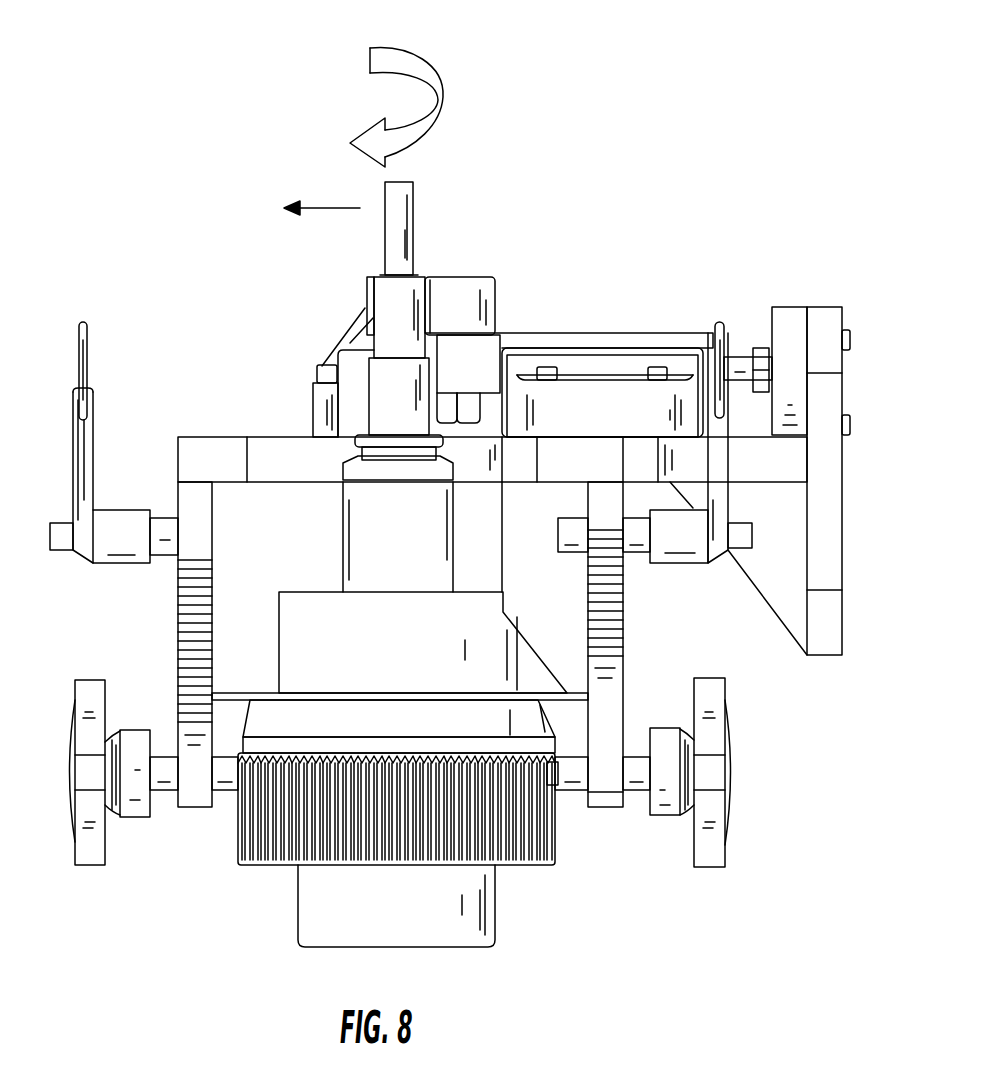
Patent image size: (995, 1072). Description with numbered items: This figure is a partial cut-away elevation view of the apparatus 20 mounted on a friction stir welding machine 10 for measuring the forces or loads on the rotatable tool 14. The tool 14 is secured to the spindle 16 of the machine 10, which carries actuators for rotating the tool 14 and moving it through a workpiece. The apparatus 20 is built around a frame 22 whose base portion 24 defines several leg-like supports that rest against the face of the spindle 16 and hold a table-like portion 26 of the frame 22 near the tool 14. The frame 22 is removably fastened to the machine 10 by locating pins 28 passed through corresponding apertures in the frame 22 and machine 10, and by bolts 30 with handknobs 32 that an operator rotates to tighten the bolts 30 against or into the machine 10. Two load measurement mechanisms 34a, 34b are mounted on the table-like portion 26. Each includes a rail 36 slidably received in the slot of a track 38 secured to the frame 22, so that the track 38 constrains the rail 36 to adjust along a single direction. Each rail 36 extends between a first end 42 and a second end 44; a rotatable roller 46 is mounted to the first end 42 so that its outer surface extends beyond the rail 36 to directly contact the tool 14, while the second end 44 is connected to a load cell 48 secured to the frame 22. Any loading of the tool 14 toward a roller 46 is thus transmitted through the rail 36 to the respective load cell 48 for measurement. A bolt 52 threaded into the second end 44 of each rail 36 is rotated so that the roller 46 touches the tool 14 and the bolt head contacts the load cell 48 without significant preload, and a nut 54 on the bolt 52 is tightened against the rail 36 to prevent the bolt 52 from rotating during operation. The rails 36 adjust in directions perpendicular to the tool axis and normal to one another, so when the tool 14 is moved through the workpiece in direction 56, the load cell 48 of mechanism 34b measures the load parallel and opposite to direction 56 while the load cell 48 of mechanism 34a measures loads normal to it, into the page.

The friction stir welding machine 10 is at (260, 962).
The tool 14 is at (385, 198).
The spindle 16 is at (495, 907).
The apparatus 20 is at (682, 190).
The frame 22 is at (843, 567).
The base portion 24 is at (625, 652).
The table-like portion 26 is at (796, 470).
The locating pins 28 is at (55, 552).
The bolts 30 is at (223, 790).
The handknobs 32 is at (73, 838).
The load measurement mechanism 34a is at (328, 318).
The load measurement mechanism 34b is at (737, 297).
The rail 36 is at (522, 333).
The track 38 is at (581, 360).
The first end 42 is at (467, 365).
The second end 44 is at (677, 333).
The roller 46 is at (367, 282).
The load cell 48 is at (363, 335).
The bolt 52 is at (770, 375).
The nut 54 is at (726, 340).
The direction 56 is at (330, 210).